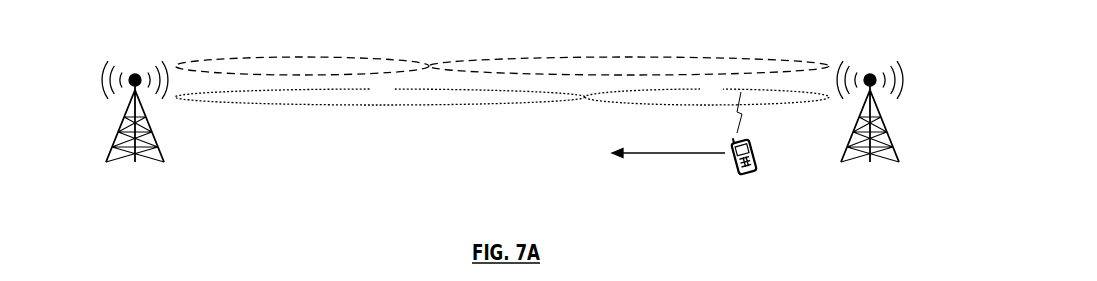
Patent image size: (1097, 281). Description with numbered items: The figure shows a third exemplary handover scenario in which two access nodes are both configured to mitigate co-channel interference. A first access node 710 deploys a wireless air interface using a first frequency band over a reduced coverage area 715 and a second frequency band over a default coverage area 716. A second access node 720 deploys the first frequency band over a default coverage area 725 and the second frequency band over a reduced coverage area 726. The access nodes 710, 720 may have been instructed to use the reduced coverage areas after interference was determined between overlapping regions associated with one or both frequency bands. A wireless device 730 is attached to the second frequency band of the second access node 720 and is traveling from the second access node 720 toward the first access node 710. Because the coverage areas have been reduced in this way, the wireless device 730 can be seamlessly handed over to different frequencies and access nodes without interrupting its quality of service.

The first access node 710 is at (115, 145).
The reduced coverage area 715 is at (235, 57).
The default coverage area 716 is at (235, 107).
The second access node 720 is at (887, 145).
The default coverage area 725 is at (775, 57).
The reduced coverage area 726 is at (778, 107).
The wireless device 730 is at (735, 175).